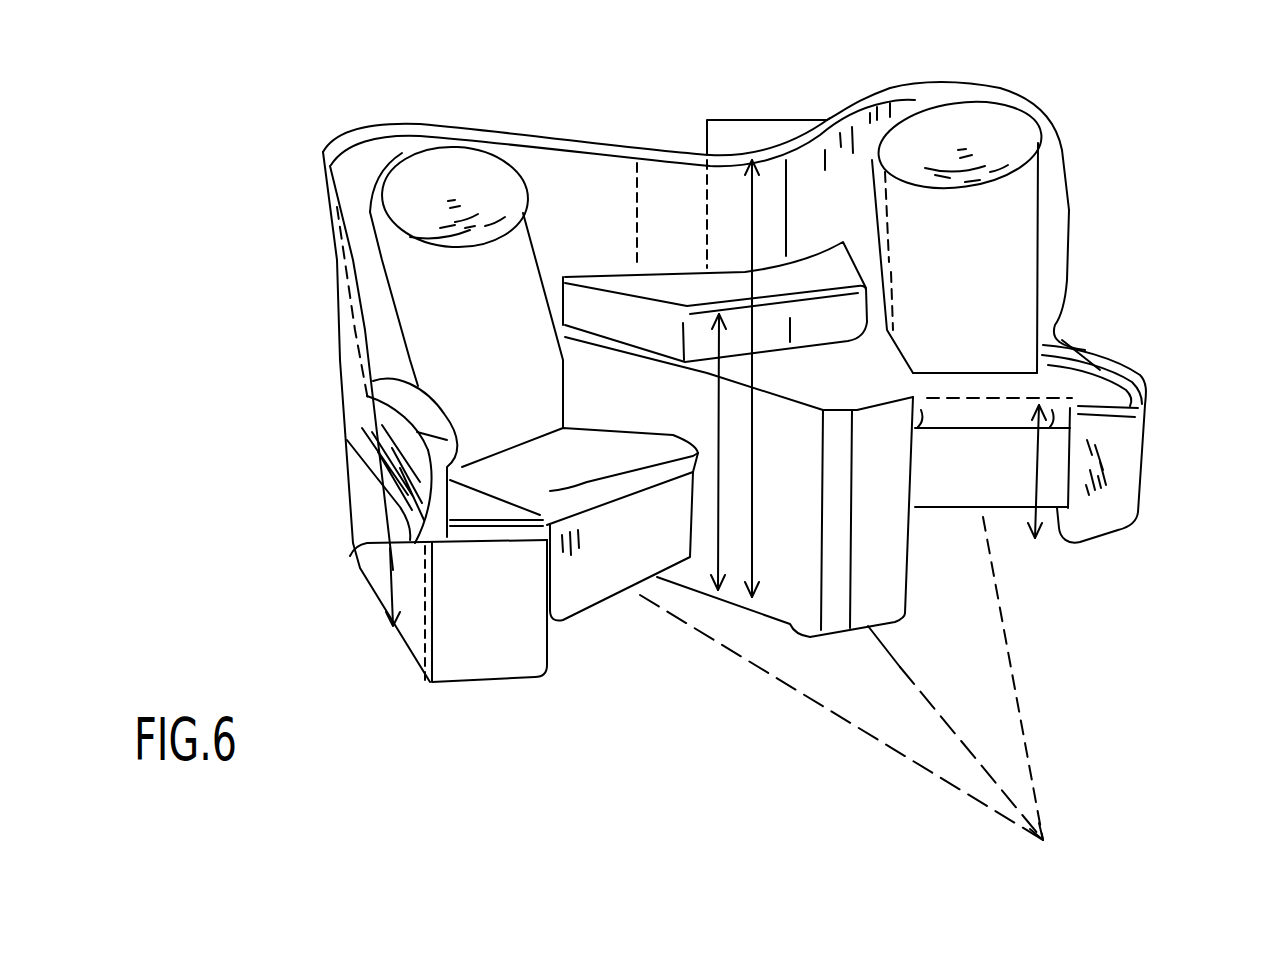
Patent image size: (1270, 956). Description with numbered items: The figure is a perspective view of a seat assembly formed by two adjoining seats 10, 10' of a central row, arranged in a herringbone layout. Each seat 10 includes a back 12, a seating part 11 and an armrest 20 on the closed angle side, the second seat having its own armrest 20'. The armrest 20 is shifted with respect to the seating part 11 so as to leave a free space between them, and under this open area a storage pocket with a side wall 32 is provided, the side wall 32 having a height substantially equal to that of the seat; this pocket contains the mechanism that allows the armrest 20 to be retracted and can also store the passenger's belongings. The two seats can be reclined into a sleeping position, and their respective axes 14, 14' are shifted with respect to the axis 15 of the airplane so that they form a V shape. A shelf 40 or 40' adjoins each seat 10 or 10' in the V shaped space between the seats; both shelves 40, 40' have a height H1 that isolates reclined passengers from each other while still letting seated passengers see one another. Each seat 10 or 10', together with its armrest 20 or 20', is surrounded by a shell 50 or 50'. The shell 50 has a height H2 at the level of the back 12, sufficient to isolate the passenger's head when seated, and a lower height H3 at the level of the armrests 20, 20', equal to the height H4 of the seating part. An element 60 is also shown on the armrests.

The seat 10 is at (435, 152).
The seat 10' is at (967, 203).
The seating part 11 is at (587, 463).
The back 12 is at (432, 329).
The axis 14 is at (841, 717).
The axis 14' is at (1048, 678).
The axis of the airplane 15 is at (920, 688).
The armrest 20 is at (357, 458).
The armrest 20' is at (1120, 419).
The side wall 32 is at (484, 650).
The shelf 40 is at (738, 471).
The shelf 40' is at (992, 503).
The shell 50 is at (571, 391).
The shell 50' is at (991, 216).
The armrest cover 60 is at (395, 451).
The height of the shelves H1 is at (718, 432).
The height of the shell at the back level H2 is at (752, 455).
The height of the shell at the armrest level H3 is at (360, 543).
The height of the seating part H4 is at (1037, 458).